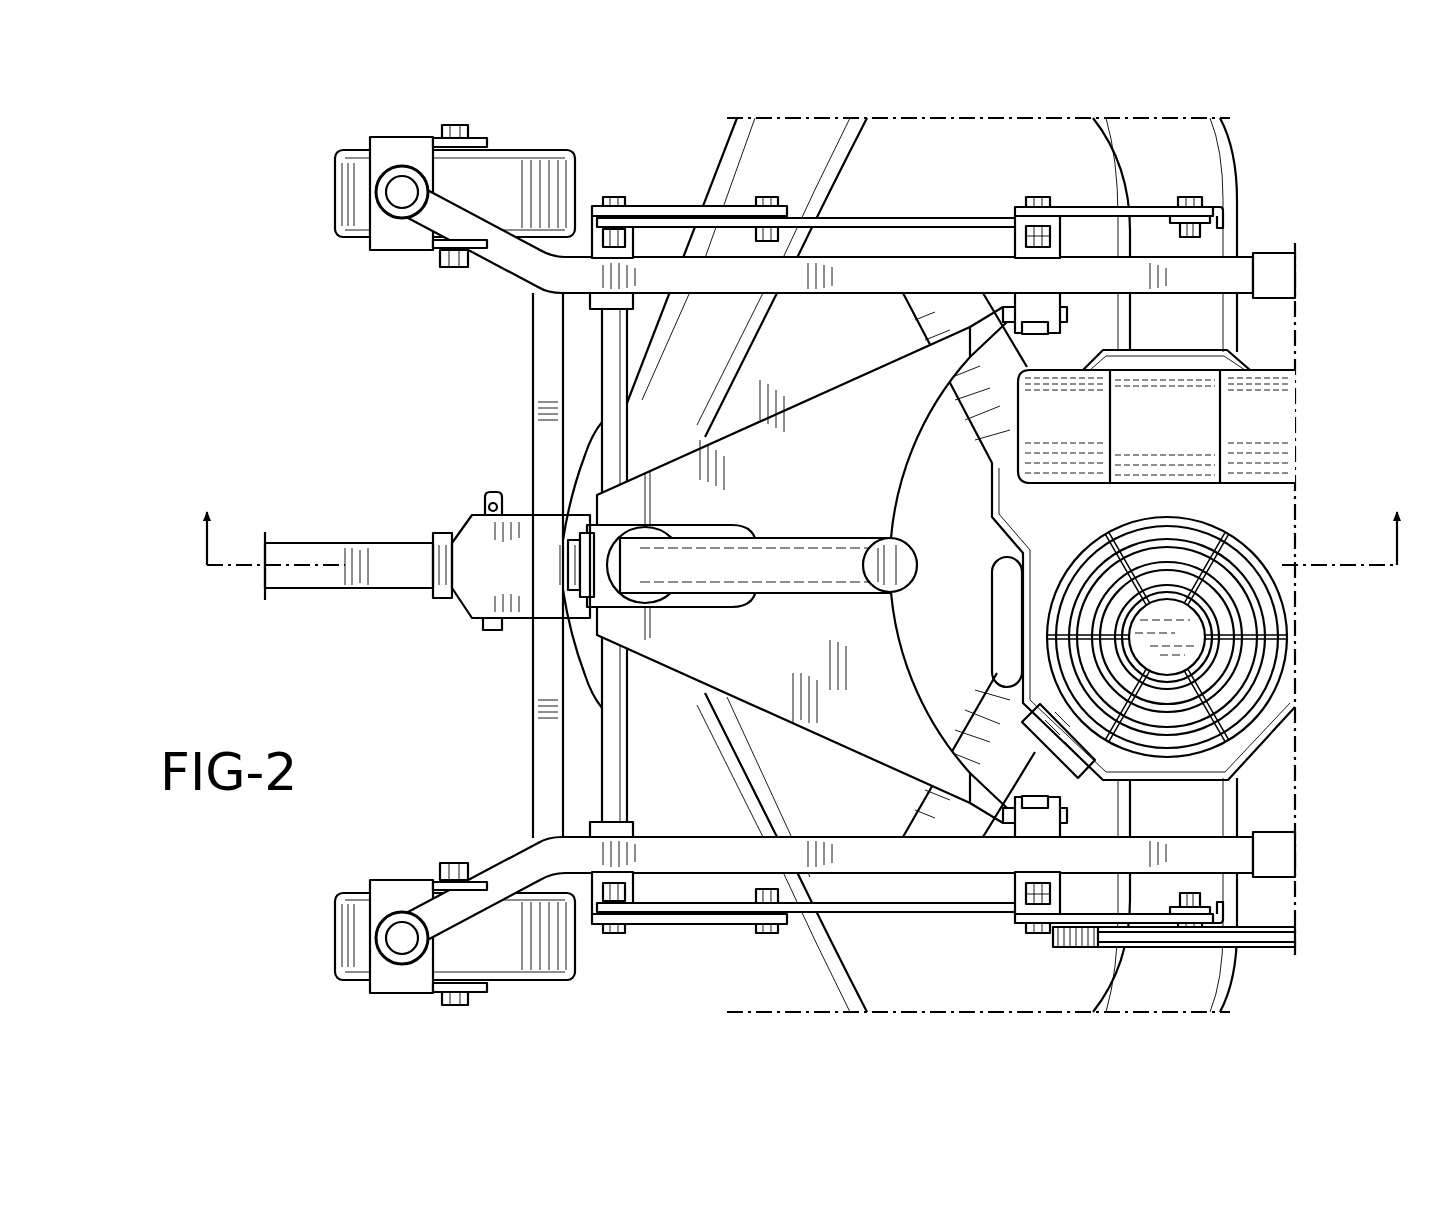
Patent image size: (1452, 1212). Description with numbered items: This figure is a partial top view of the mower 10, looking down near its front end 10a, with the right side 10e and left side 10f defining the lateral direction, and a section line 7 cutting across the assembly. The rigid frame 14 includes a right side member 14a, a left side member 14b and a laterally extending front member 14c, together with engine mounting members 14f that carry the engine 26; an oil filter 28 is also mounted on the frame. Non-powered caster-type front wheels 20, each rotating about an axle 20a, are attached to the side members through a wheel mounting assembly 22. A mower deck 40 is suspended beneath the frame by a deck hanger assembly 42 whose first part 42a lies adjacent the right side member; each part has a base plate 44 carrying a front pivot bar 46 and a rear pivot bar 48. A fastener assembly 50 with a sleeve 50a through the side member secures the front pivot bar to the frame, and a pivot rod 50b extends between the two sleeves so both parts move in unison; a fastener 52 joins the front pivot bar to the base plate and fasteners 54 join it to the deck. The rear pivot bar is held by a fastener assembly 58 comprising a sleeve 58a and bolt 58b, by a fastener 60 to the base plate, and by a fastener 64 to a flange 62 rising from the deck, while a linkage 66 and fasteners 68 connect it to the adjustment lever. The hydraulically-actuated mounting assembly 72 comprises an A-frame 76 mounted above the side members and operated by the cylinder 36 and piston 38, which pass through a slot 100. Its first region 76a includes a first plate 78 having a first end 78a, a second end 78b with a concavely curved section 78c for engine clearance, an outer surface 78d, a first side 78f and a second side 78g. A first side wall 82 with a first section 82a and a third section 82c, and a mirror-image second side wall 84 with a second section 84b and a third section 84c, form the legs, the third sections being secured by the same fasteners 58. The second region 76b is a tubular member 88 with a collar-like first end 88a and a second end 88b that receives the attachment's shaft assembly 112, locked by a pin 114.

The section line 7- 7 is at (802, 565).
The mower 10 is at (302, 298).
The front end 10a is at (408, 377).
The right side 10e is at (1259, 151).
The left side 10f is at (1256, 976).
The frame 14 is at (892, 568).
The right side member 14a is at (715, 282).
The left side member 14b is at (873, 850).
The front member 14c is at (545, 742).
The engine mounting members 14f is at (997, 433).
The front wheels 20 is at (333, 216).
The axle 20a is at (456, 268).
The wheel mounting assembly 22 is at (368, 183).
The engine 26 is at (1260, 528).
The oil filter 28 is at (1263, 424).
The cylinder 36 is at (912, 556).
The piston 38 is at (592, 566).
The mower deck 40 is at (678, 437).
The deck hanger assembly 42 is at (906, 926).
The first part 42a is at (931, 205).
The base plate 44 is at (893, 216).
The front pivot bar 46 is at (666, 201).
The rear pivot bar 48 is at (1151, 220).
The fastener assembly 50 is at (539, 565).
The sleeve 50a is at (592, 300).
The pivot rod 50b is at (603, 393).
The fastener 52 is at (607, 197).
The fasteners 54 is at (765, 197).
The fastener assembly 58 is at (1154, 569).
The sleeve 58a is at (1037, 300).
The bolt 58b is at (1040, 334).
The fastener 60 is at (1035, 197).
The flange 62 is at (1223, 217).
The fastener 64 is at (1187, 238).
The linkage 66 is at (1212, 962).
The fasteners 68 is at (1034, 953).
The mounting assembly 72 is at (438, 549).
The A-frame 76 is at (893, 350).
The first region 76a is at (818, 393).
The second region 76b is at (377, 629).
The first plate 78 is at (689, 565).
The first end 78a is at (558, 505).
The second end 78b is at (903, 476).
The concavely curved section 78c is at (895, 622).
The outer surface 78d is at (790, 666).
The first side 78f is at (783, 425).
The second side 78g is at (770, 716).
The first side wall 82 is at (753, 394).
The first section 82a is at (473, 527).
The third section 82c is at (1070, 312).
The second side wall 84 is at (907, 749).
The second section 84b is at (920, 805).
The third section 84c is at (1072, 823).
The tubular member 88 is at (472, 571).
The first end 88a is at (433, 563).
The second end 88b is at (542, 495).
The slot 100 is at (708, 500).
The shaft assembly 112 is at (296, 546).
The pin 114 is at (490, 632).